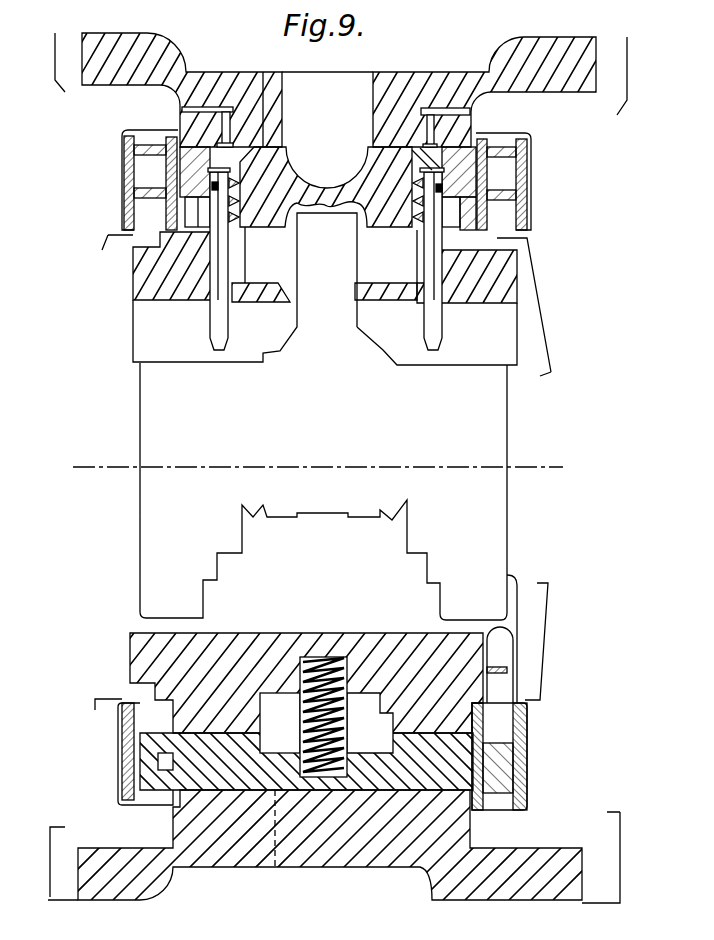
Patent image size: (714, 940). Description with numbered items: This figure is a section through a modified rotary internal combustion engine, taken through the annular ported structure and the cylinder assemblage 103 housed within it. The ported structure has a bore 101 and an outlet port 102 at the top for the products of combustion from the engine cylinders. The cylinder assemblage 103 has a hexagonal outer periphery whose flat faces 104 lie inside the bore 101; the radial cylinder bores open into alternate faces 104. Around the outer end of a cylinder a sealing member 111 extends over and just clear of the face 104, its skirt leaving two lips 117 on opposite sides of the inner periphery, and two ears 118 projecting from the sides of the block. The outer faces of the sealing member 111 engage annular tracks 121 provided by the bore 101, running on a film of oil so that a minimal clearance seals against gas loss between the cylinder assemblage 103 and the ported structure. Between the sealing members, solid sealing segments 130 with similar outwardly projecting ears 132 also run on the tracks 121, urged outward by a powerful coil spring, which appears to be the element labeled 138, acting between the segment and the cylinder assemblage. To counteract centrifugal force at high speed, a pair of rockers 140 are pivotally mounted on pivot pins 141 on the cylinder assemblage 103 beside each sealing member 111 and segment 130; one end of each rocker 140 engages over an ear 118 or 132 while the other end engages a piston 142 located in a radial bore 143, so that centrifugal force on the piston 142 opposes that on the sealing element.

The bore 101 is at (264, 72).
The outlet port 102 is at (367, 115).
The cylinder assemblage 103 is at (110, 208).
The face 104 is at (150, 633).
The sealing member 111 is at (193, 150).
The lip 117 is at (430, 157).
The ear 118 is at (147, 182).
The annular track 121 is at (200, 107).
The sealing segment 130 is at (187, 780).
The ear 132 is at (147, 752).
The spring 138 is at (303, 713).
The rocker 140 is at (142, 143).
The pivot pin 141 is at (506, 180).
The piston 142 is at (498, 703).
The radial bore 143 is at (520, 743).